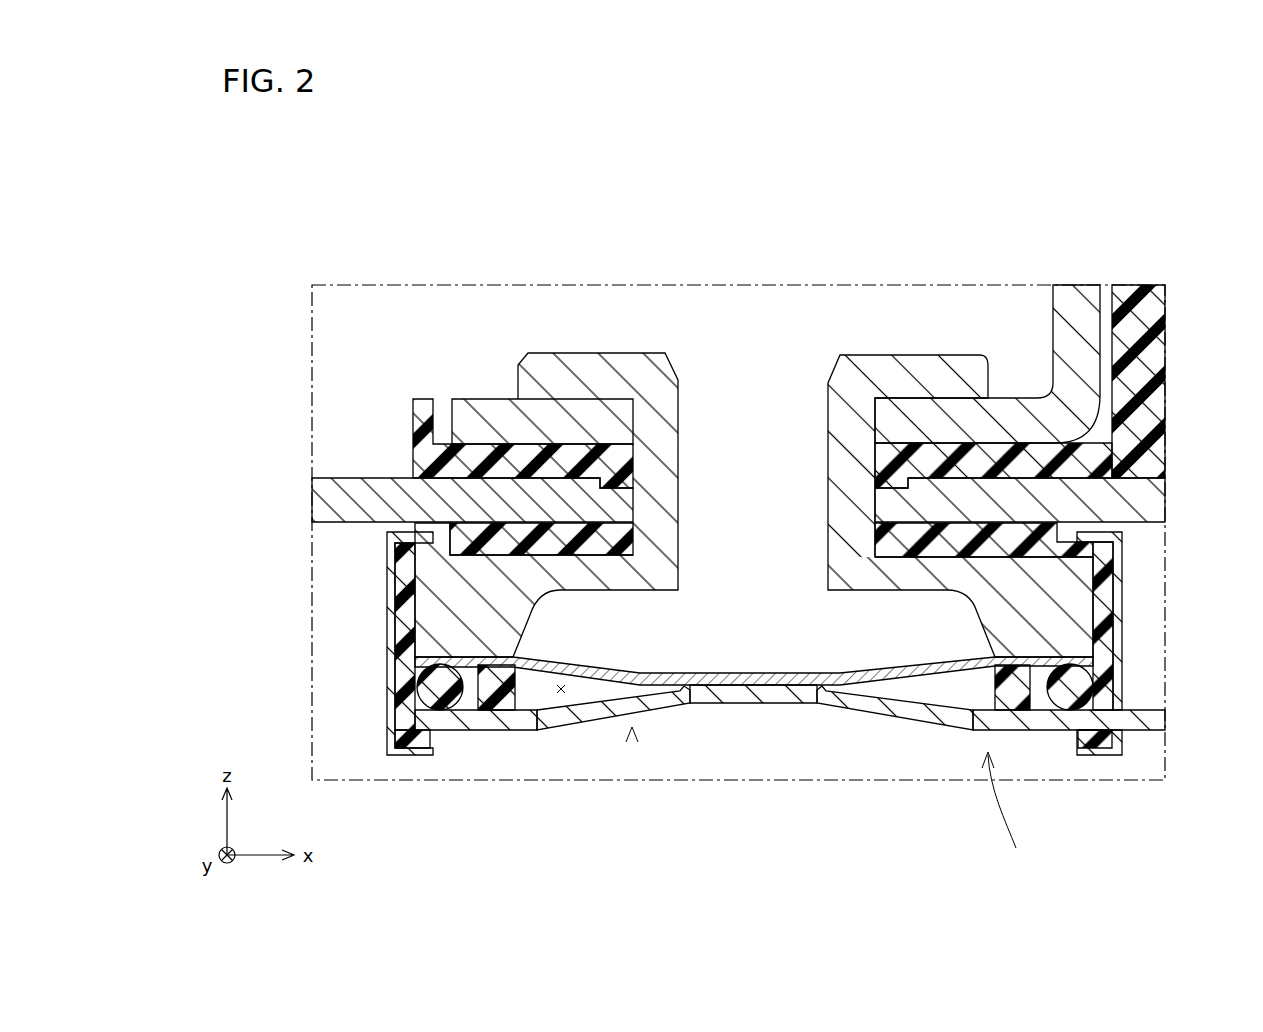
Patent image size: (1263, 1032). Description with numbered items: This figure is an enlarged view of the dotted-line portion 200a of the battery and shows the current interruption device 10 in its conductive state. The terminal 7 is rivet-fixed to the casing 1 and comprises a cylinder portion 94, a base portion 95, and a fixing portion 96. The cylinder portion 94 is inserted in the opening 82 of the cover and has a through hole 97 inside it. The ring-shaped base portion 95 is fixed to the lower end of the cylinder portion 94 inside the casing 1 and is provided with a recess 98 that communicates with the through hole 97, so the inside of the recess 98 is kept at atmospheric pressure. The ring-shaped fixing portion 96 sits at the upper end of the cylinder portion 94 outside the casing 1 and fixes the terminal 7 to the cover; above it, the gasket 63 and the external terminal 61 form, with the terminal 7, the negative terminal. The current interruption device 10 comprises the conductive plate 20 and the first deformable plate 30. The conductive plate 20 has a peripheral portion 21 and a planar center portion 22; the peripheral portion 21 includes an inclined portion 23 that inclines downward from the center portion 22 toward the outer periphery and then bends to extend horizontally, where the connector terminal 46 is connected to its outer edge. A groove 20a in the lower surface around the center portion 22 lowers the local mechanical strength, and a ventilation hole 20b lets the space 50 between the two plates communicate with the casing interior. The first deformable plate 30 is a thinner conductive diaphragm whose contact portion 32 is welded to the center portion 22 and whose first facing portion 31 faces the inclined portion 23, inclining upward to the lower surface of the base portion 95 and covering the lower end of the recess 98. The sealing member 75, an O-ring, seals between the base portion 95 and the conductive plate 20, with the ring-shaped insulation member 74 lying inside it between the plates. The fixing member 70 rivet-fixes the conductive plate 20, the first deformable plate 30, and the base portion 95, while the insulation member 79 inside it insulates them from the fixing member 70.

The casing 1 is at (318, 511).
The terminal 7 is at (546, 430).
The current interruption device 10 is at (1007, 813).
The conductive plate 20 is at (694, 779).
The groove 20a is at (822, 698).
The ventilation hole 20b is at (520, 722).
The peripheral portion 21 is at (686, 697).
The center portion 22 is at (722, 703).
The inclined portion 23 is at (632, 742).
The first deformable plate 30 is at (754, 444).
The first facing portion 31 is at (552, 671).
The contact portion 32 is at (765, 679).
The connector terminal 46 is at (1140, 722).
The space 50 is at (588, 702).
The external terminal 61 is at (1098, 366).
The gasket 63 is at (1033, 452).
The fixing member 70 is at (391, 584).
The insulation member 74 is at (1010, 708).
The sealing member 75 is at (1106, 690).
The insulation member 79 is at (406, 671).
The opening 82 is at (897, 486).
The cylinder portion 94 is at (650, 430).
The base portion 95 is at (472, 568).
The fixing portion 96 is at (590, 365).
The through hole 97 is at (828, 440).
The recess 98 is at (912, 590).
The dotted-line portion 200a is at (375, 284).